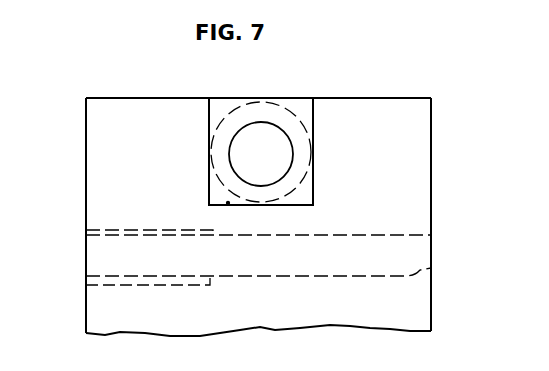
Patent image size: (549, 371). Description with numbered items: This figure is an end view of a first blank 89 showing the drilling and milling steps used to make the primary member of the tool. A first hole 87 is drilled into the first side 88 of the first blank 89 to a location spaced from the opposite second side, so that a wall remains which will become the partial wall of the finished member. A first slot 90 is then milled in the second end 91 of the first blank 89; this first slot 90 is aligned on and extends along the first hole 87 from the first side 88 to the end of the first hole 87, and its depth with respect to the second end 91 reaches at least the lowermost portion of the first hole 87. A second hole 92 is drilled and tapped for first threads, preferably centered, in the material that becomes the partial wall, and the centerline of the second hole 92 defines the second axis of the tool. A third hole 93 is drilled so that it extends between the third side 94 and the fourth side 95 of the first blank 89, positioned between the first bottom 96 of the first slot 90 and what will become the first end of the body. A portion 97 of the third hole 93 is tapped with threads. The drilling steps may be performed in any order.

The dashed circle / aperture 87 is at (310, 190).
The plate edge 88 is at (432, 131).
The plate 89 is at (432, 169).
The square opening 90 is at (314, 112).
The top edge 91 is at (384, 97).
The circular hole 92 is at (290, 160).
The hidden channel 93 is at (432, 269).
The side wall 94 is at (432, 202).
The left edge 95 is at (86, 208).
The point 96 is at (228, 204).
The hidden channel step 97 is at (155, 286).